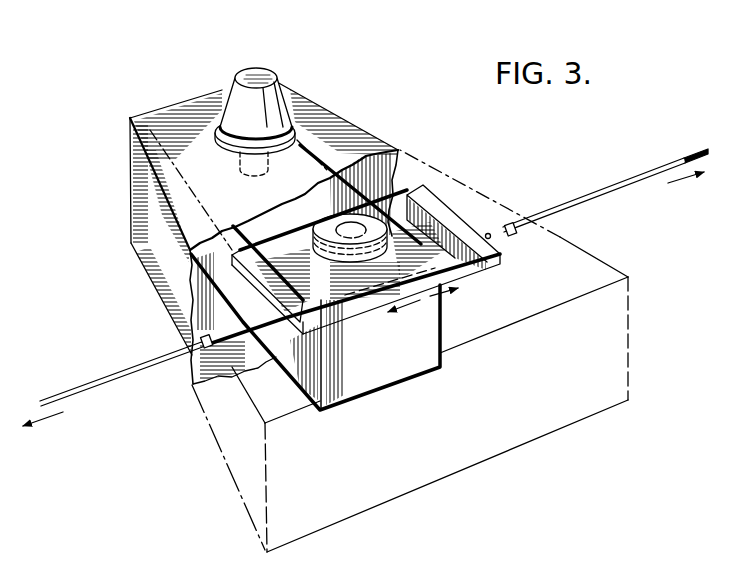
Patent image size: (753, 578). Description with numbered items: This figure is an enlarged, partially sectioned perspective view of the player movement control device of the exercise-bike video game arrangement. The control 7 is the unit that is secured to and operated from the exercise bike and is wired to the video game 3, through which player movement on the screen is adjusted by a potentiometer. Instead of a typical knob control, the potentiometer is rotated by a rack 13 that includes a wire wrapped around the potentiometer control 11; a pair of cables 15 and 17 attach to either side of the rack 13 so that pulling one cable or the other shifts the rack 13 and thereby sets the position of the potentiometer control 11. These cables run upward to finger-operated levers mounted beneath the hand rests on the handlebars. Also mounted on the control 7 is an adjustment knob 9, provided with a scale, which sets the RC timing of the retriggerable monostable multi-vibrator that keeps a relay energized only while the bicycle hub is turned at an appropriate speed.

The video game 3 is at (121, 236).
The control 7 is at (470, 207).
The adjustment knob 9 is at (258, 67).
The potentiometer control 11 is at (352, 213).
The rack 13 is at (466, 262).
The cable 15 is at (619, 188).
The cable 17 is at (111, 372).